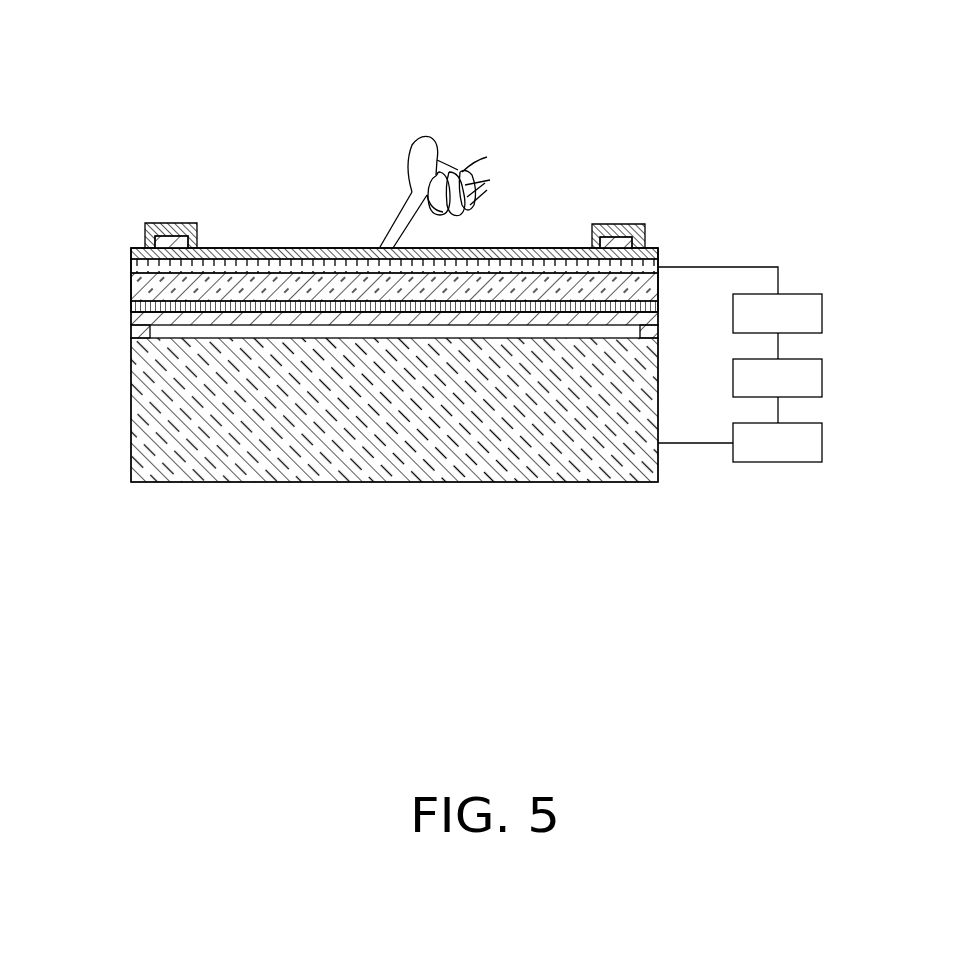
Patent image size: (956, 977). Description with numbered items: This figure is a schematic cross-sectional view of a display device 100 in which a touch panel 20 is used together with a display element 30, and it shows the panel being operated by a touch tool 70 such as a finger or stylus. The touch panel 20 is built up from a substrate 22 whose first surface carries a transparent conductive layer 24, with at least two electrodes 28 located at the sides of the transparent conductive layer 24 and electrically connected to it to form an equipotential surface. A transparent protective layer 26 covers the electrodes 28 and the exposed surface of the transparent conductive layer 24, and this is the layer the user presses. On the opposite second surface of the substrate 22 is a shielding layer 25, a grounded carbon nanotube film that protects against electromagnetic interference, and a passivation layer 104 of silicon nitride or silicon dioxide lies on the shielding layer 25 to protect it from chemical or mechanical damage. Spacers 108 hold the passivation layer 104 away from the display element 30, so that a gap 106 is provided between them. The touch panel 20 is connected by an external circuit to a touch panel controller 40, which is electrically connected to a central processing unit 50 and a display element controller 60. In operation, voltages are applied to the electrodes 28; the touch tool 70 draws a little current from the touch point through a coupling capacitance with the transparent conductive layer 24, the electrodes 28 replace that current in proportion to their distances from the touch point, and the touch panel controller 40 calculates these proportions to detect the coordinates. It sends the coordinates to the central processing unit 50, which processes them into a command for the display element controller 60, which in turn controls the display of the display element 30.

The display device 100 is at (458, 36).
The touch panel 20 is at (52, 229).
The transparent protective layer 26 is at (131, 252).
The transparent conductive layer 24 is at (131, 265).
The substrate 22 is at (130, 281).
The shielding layer 25 is at (130, 305).
The electrodes 28 is at (617, 240).
The passivation layer 104 is at (130, 320).
The spacers 108 is at (131, 333).
The gap 106 is at (650, 332).
The display element 30 is at (150, 404).
The touch tool 70 is at (413, 167).
The touch panel controller 40 is at (822, 313).
The central processing unit 50 is at (822, 378).
The display element controller 60 is at (822, 443).